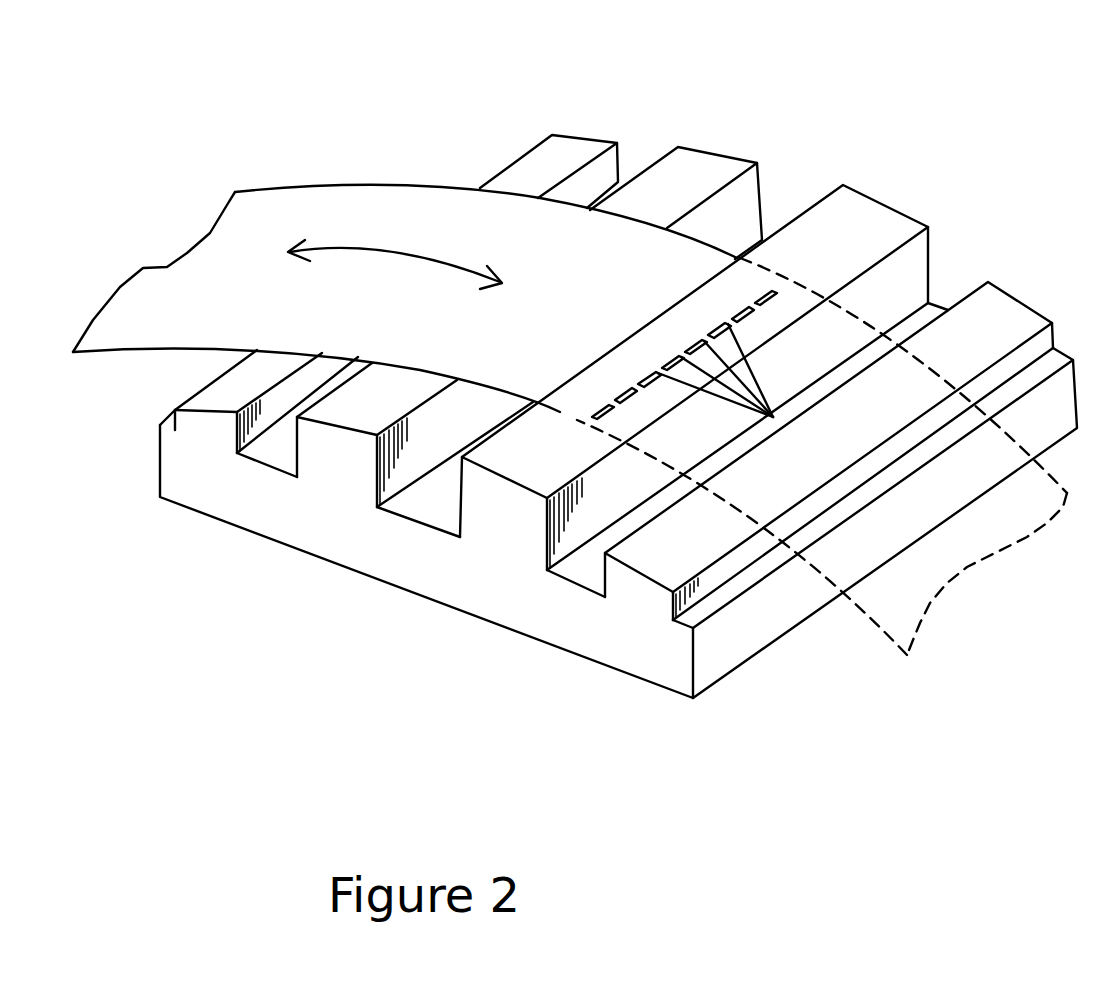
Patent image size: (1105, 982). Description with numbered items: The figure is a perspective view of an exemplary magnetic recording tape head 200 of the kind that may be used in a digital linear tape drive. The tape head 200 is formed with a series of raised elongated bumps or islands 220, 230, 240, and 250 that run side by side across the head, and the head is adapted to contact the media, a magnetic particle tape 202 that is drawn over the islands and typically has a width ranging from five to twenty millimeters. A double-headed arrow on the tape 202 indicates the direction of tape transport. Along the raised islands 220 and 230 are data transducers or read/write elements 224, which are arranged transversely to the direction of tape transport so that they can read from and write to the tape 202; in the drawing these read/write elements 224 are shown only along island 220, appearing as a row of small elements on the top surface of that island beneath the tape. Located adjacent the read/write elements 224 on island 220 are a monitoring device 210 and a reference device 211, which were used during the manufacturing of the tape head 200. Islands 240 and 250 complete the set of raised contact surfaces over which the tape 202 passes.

The tape head 200 is at (168, 504).
The tape 202 is at (273, 188).
The monitoring device 210 is at (745, 307).
The reference device 211 is at (768, 293).
The raised island 220 is at (460, 512).
The read/write elements 224 is at (773, 417).
The raised island 230 is at (297, 453).
The raised island 240 is at (603, 574).
The raised island 250 is at (190, 397).